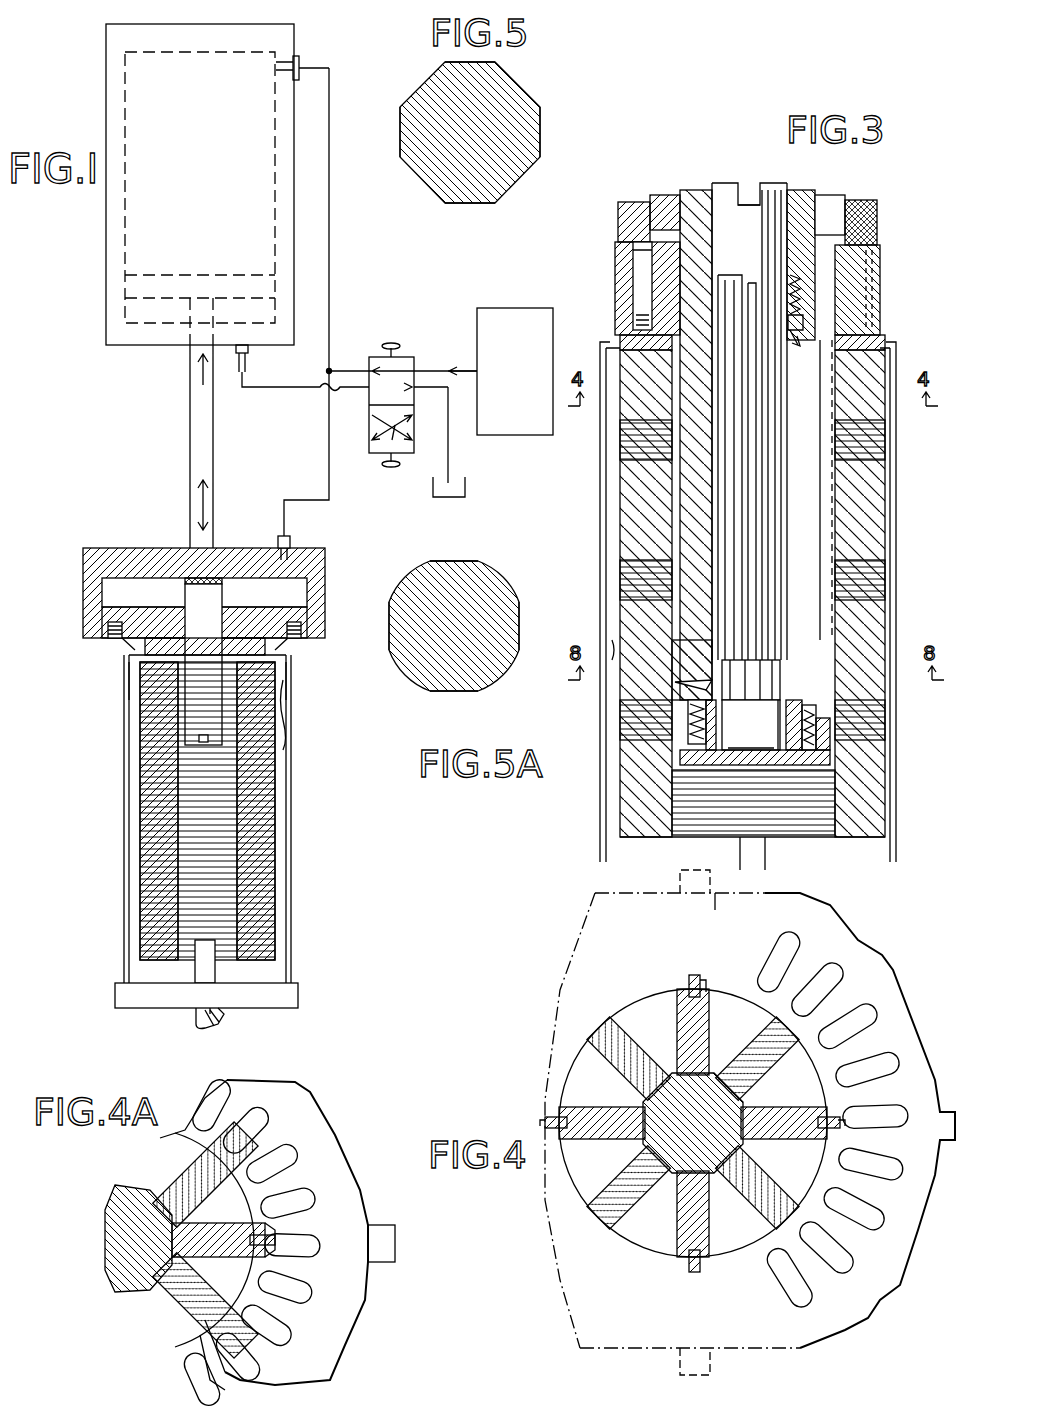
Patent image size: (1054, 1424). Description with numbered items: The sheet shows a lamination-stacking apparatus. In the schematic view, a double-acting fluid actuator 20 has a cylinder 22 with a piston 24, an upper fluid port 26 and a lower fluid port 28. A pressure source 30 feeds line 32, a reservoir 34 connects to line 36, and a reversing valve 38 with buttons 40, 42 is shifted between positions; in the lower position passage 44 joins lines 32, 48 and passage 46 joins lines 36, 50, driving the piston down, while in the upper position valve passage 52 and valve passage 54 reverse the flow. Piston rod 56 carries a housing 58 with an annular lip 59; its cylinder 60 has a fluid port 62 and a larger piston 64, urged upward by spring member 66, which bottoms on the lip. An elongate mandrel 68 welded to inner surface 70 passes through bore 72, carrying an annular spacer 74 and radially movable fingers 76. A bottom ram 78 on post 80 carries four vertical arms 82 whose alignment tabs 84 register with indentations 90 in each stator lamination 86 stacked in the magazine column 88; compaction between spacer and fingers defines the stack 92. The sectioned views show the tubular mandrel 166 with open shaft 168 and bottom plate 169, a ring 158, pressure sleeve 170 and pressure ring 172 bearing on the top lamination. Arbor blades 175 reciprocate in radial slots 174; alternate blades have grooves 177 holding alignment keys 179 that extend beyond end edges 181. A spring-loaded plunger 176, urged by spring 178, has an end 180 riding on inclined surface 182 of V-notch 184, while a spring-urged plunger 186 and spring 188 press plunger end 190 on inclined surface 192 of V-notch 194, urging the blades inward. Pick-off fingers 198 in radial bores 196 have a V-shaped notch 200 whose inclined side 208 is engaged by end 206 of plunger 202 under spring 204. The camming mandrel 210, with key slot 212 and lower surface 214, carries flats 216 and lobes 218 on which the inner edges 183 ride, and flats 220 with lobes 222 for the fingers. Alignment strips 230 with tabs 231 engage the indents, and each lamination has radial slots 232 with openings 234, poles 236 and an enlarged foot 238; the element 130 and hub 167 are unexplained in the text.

In FIG. 1, the double-acting fluid actuator 20 is at (97, 237).
In FIG. 1, the cylinder 22 is at (125, 85).
In FIG. 1, the piston 24 is at (223, 274).
In FIG. 1, the fluid port 26 is at (320, 68).
In FIG. 1, the fluid port 28 is at (250, 350).
In FIG. 1, the pressure source 30 is at (521, 340).
In FIG. 1, the line 32 is at (437, 370).
In FIG. 1, the reservoir 34 is at (466, 487).
In FIG. 1, the line 36 is at (450, 455).
In FIG. 1, the reversing valve 38 is at (376, 348).
In FIG. 1, the button 40 is at (393, 340).
In FIG. 1, the button 42 is at (391, 470).
In FIG. 1, the passage 44 is at (408, 363).
In FIG. 1, the passage 46 is at (376, 390).
In FIG. 1, the line 48 is at (330, 278).
In FIG. 1, the line 50 is at (281, 388).
In FIG. 1, the valve passage 52 is at (406, 422).
In FIG. 1, the valve passage 54 is at (385, 435).
In FIG. 1, the piston rod 56 is at (190, 368).
In FIG. 1, the housing 58 is at (106, 541).
In FIG. 1, the annular lip 59 is at (302, 630).
In FIG. 1, the cylinder 60 is at (307, 592).
In FIG. 1, the fluid port 62 is at (291, 548).
In FIG. 1, the piston 64 is at (240, 618).
In FIG. 1, the spring member 66 is at (122, 638).
In FIG. 1, the elongate mandrel 68 is at (212, 626).
In FIG. 1, the inner surface 70 is at (152, 578).
In FIG. 1, the bore 72 is at (226, 628).
In FIG. 1, the annular spacer 74 is at (122, 650).
In FIG. 1, the fingers 76 is at (204, 733).
In FIG. 1, the bottom ram 78 is at (300, 997).
In FIG. 1, the post 80 is at (219, 1018).
In FIG. 1, the vertical arms 82 is at (291, 845).
In FIG. 1, the alignment tabs 84 is at (128, 680).
In FIG. 4, the stator lamination 86 is at (830, 950).
In FIG. 4A, the stator lamination 86 is at (305, 1126).
In FIG. 1, the vertical magazine column 88 is at (250, 796).
In FIG. 3, the vertical magazine column 88 is at (632, 546).
In FIG. 4, the indentations 90 is at (723, 908).
In FIG. 1, the stack 92 is at (286, 716).
In FIG. 4A, the terminal 130 is at (382, 1243).
In FIG. 3, the ring 158 is at (872, 228).
In FIG. 3, the tubular mandrel 166 is at (676, 193).
In FIG. 4, the hub 167 is at (692, 1125).
In FIG. 4A, the hub 167 is at (106, 1245).
In FIG. 3, the open shaft 168 is at (712, 183).
In FIG. 3, the bottom plate 169 is at (738, 782).
In FIG. 3, the pressure sleeve 170 is at (615, 268).
In FIG. 3, the pressure ring 172 is at (620, 342).
In FIG. 4, the radial slots 174 is at (756, 1040).
In FIG. 4A, the radial slots 174 is at (175, 1168).
In FIG. 3, the arbor blade 175 is at (818, 540).
In FIG. 4, the arbor blade 175 is at (760, 1107).
In FIG. 4A, the arbor blade 175 is at (220, 1232).
In FIG. 3, the spring-loaded plunger 176 is at (822, 302).
In FIG. 4, the grooves 177 is at (692, 975).
In FIG. 4A, the grooves 177 is at (276, 1248).
In FIG. 3, the spring 178 is at (790, 276).
In FIG. 4, the alignment keys 179 is at (706, 982).
In FIG. 3, the end of plunger 180 is at (806, 320).
In FIG. 4, the end edges 181 is at (680, 980).
In FIG. 4A, the end edges 181 is at (272, 1232).
In FIG. 3, the inclined surface 182 is at (797, 348).
In FIG. 4, the inner edges 183 is at (740, 1140).
In FIG. 4A, the inner edges 183 is at (120, 1195).
In FIG. 3, the V-notch 184 is at (813, 342).
In FIG. 3, the spring-urged plunger 186 is at (835, 732).
In FIG. 3, the spring 188 is at (885, 758).
In FIG. 3, the plunger end 190 is at (808, 700).
In FIG. 3, the inclined surface 192 is at (809, 704).
In FIG. 3, the V-notch 194 is at (840, 714).
In FIG. 3, the radial bores 196 is at (694, 668).
In FIG. 3, the pick-off finger 198 is at (690, 686).
In FIG. 3, the V-shaped notch 200 is at (622, 660).
In FIG. 3, the plunger 202 is at (706, 726).
In FIG. 3, the spring 204 is at (682, 757).
In FIG. 3, the end of plunger 206 is at (692, 712).
In FIG. 3, the inclined side 208 is at (749, 680).
In FIG. 5, the camming mandrel 210 is at (437, 141).
In FIG. 5A, the camming mandrel 210 is at (468, 607).
In FIG. 3, the camming mandrel 210 is at (776, 192).
In FIG. 3, the key slot 212 is at (746, 184).
In FIG. 3, the lower surface 214 is at (748, 745).
In FIG. 5, the flats 216 is at (422, 82).
In FIG. 3, the flats 216 is at (760, 607).
In FIG. 4, the flats 216 is at (650, 1075).
In FIG. 5, the lobes 218 is at (541, 110).
In FIG. 3, the lobes 218 is at (768, 448).
In FIG. 4, the lobes 218 is at (645, 1100).
In FIG. 4A, the lobes 218 is at (110, 1215).
In FIG. 5A, the flats 220 is at (452, 561).
In FIG. 5A, the lobes 222 is at (410, 572).
In FIG. 3, the alignment strips 230 is at (606, 857).
In FIG. 3, the tabs 231 is at (600, 346).
In FIG. 4, the tabs 231 is at (688, 880).
In FIG. 4, the radial slots 232 is at (840, 1025).
In FIG. 4, the openings 234 is at (860, 1065).
In FIG. 4, the poles 236 is at (865, 1118).
In FIG. 4, the enlarged foot 238 is at (760, 1055).